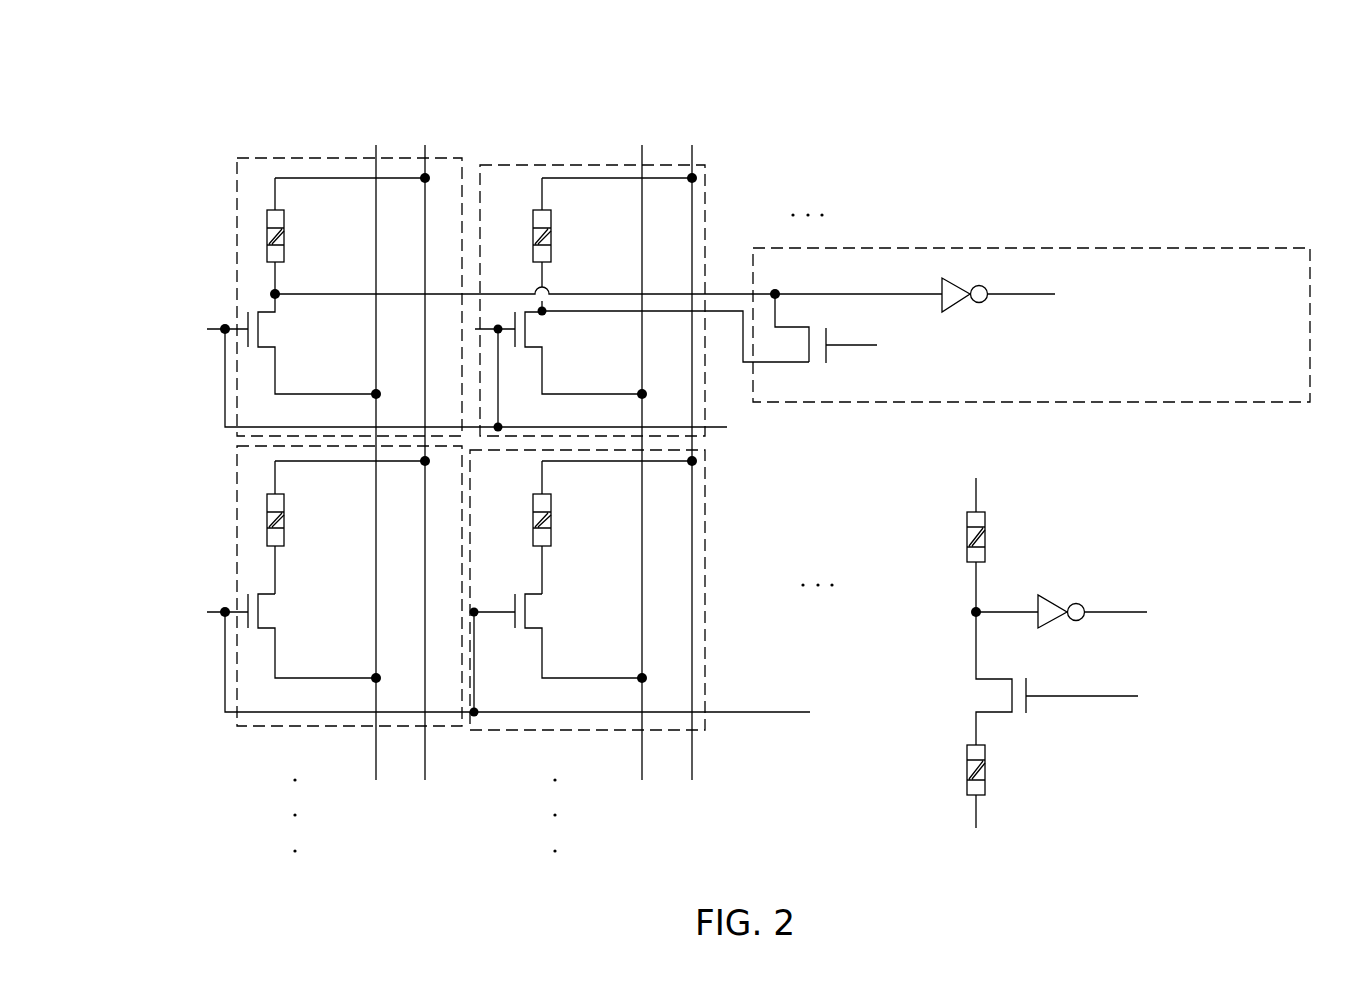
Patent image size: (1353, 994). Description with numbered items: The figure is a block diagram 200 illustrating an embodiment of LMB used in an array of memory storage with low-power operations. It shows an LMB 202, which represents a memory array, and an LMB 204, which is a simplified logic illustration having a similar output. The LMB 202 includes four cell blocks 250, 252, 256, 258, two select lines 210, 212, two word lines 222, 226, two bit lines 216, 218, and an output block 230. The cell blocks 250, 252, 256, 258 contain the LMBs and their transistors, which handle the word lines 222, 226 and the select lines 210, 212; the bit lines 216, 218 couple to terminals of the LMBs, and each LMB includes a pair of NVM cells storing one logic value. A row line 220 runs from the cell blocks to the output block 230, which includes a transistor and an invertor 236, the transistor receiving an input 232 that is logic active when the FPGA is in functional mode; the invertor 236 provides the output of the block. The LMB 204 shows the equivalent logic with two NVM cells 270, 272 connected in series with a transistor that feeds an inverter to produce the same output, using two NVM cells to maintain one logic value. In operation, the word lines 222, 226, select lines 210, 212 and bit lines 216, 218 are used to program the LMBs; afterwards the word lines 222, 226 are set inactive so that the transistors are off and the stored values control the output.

The block diagram 200 is at (278, 75).
The LMB 202 is at (1192, 160).
The LMB 204 is at (1202, 542).
The select line 210 is at (372, 762).
The select line 212 is at (638, 762).
The bit line 216 is at (430, 762).
The bit line 218 is at (695, 762).
The row output line 220 is at (826, 292).
The word line 222 is at (220, 373).
The word line 226 is at (220, 657).
The output block 230 is at (1210, 285).
The input 232 is at (1009, 357).
The invertor 236 is at (957, 290).
The cell block 250 is at (707, 385).
The cell block 252 is at (705, 592).
The cell block 256 is at (275, 158).
The cell block 258 is at (275, 726).
The NVM cell 270 is at (988, 525).
The NVM cell 272 is at (988, 755).